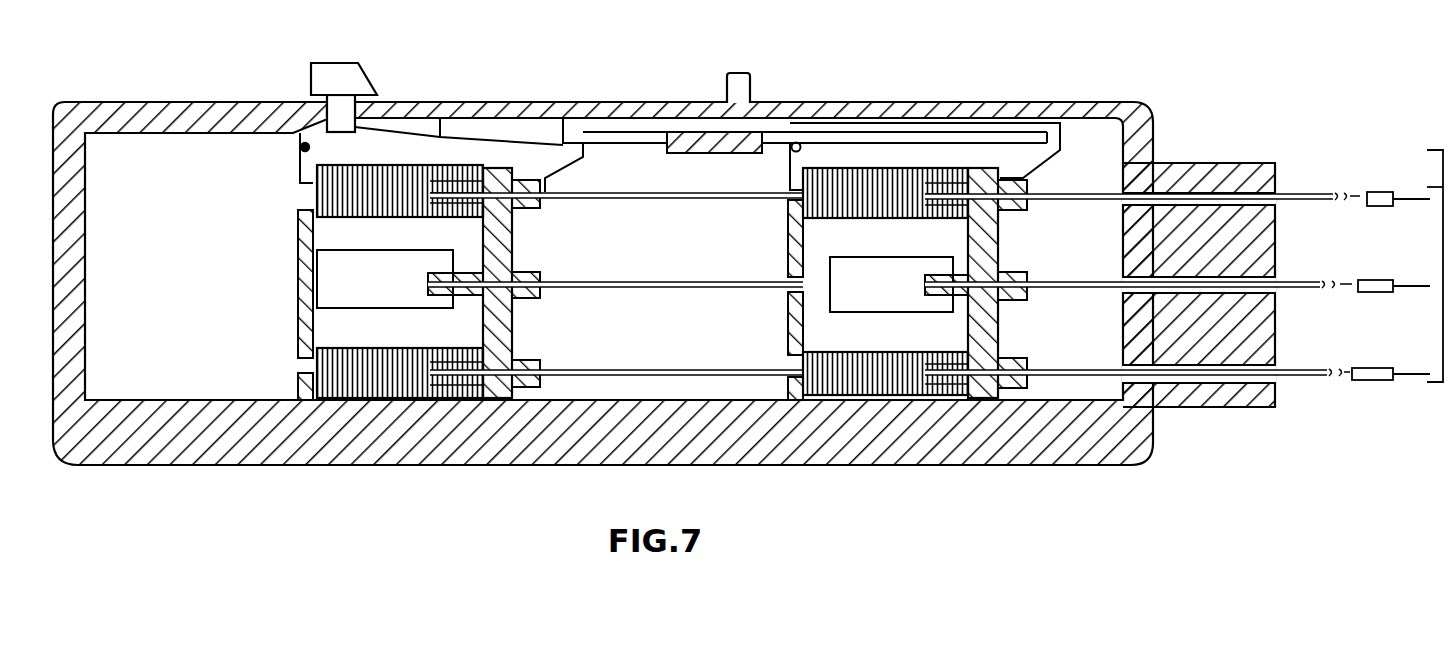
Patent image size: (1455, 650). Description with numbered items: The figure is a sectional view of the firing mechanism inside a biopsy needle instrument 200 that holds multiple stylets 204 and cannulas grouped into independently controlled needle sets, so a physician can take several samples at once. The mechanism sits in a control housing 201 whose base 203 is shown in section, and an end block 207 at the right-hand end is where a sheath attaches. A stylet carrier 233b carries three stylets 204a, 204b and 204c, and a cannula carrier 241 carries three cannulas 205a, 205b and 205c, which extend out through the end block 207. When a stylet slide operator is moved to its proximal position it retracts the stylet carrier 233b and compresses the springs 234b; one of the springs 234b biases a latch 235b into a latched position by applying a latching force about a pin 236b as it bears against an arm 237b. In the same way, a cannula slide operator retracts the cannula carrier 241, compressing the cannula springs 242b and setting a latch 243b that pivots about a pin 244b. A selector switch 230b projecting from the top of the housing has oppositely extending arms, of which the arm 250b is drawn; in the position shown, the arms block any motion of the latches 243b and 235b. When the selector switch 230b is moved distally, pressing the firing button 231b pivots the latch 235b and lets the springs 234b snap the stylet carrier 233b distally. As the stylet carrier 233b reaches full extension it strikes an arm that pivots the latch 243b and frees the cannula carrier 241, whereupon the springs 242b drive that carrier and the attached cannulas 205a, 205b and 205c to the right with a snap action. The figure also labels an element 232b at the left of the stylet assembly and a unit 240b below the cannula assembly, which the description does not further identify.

The biopsy needle instrument 200 is at (748, 258).
The control housing 201 is at (195, 101).
The base 203 is at (240, 102).
The stylets 204 is at (1414, 255).
The stylet 204a is at (602, 194).
The stylet 204b is at (607, 283).
The stylet 204c is at (602, 370).
The cannula 205a is at (1057, 195).
The cannula 205b is at (1053, 283).
The cannula 205c is at (1065, 370).
The end block 207 is at (1241, 410).
The selector switch 230b is at (745, 73).
The firing button 231b is at (338, 62).
The end wall 232b is at (298, 290).
The stylet carrier 233b is at (513, 334).
The springs 234b is at (432, 216).
The latch 235b is at (440, 118).
The pin 236b is at (299, 148).
The arm 237b is at (300, 183).
The second actuator unit 240b is at (945, 337).
The cannula carrier 241 is at (1000, 346).
The cannula springs 242b is at (930, 216).
The latch 243b is at (993, 147).
The pin 244b is at (790, 151).
The arm 250b is at (642, 128).